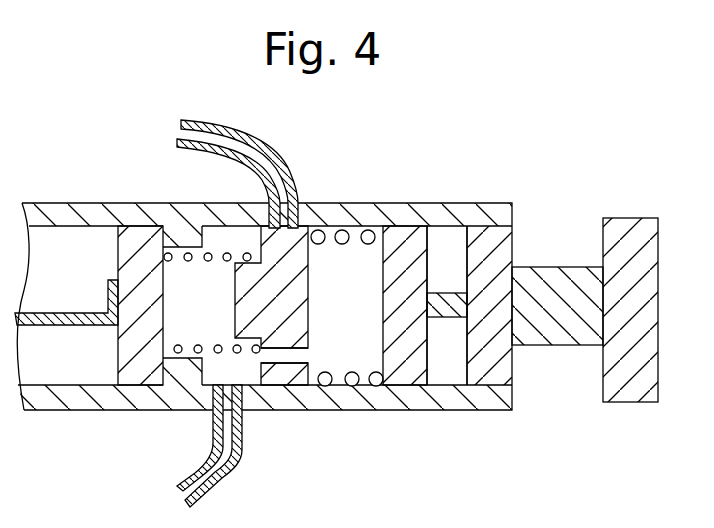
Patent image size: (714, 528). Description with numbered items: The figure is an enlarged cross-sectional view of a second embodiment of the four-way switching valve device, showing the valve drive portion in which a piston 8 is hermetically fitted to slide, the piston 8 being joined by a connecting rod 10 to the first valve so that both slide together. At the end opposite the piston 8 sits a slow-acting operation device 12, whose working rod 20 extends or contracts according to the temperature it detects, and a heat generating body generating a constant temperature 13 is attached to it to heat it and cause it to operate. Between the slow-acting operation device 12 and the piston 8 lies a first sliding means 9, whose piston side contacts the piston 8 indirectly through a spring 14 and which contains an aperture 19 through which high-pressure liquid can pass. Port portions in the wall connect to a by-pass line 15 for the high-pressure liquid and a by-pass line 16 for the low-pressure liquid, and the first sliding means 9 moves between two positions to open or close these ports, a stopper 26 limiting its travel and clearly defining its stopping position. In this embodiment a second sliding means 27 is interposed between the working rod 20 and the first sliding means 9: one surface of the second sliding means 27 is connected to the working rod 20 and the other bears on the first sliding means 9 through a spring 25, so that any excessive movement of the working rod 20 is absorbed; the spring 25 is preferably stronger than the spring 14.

The piston 8 is at (133, 237).
The first sliding means 9 is at (304, 235).
The connecting rod 10 is at (65, 320).
The slow-acting operation device 12 is at (558, 270).
The heat generating body generating a constant temperature 13 is at (630, 222).
The spring 14 is at (187, 360).
The by-pass line for the high-pressure liquid 15 is at (223, 123).
The by-pass line for the low-pressure liquid 16 is at (235, 478).
The aperture 19 is at (289, 364).
The working rod 20 is at (443, 293).
The spring 25 is at (350, 386).
The stopper 26 is at (182, 218).
The second sliding means 27 is at (408, 233).